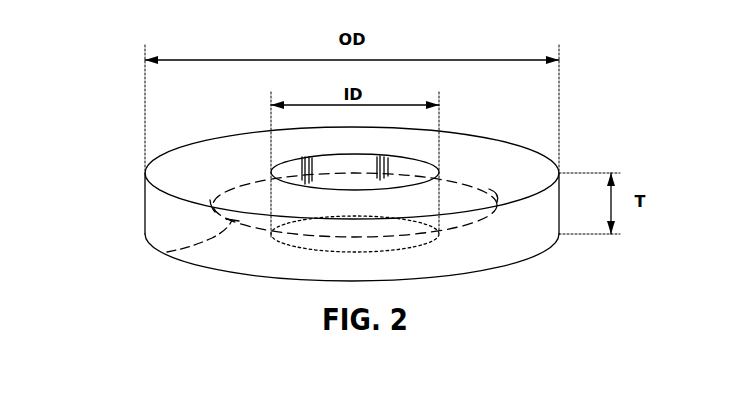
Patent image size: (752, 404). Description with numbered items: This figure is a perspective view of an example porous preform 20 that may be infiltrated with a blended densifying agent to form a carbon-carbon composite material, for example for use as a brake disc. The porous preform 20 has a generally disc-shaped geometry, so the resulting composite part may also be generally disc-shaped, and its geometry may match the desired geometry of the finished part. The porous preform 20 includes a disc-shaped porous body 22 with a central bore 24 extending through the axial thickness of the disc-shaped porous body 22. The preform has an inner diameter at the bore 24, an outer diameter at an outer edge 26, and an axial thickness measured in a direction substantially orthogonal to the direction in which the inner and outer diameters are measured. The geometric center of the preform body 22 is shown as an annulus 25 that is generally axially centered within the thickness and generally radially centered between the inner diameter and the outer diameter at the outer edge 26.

The porous preform 20 is at (311, 179).
The disc-shaped porous body 22 is at (498, 252).
The central bore 24 is at (448, 168).
The annulus 25 is at (167, 252).
The outer edge 26 is at (145, 203).